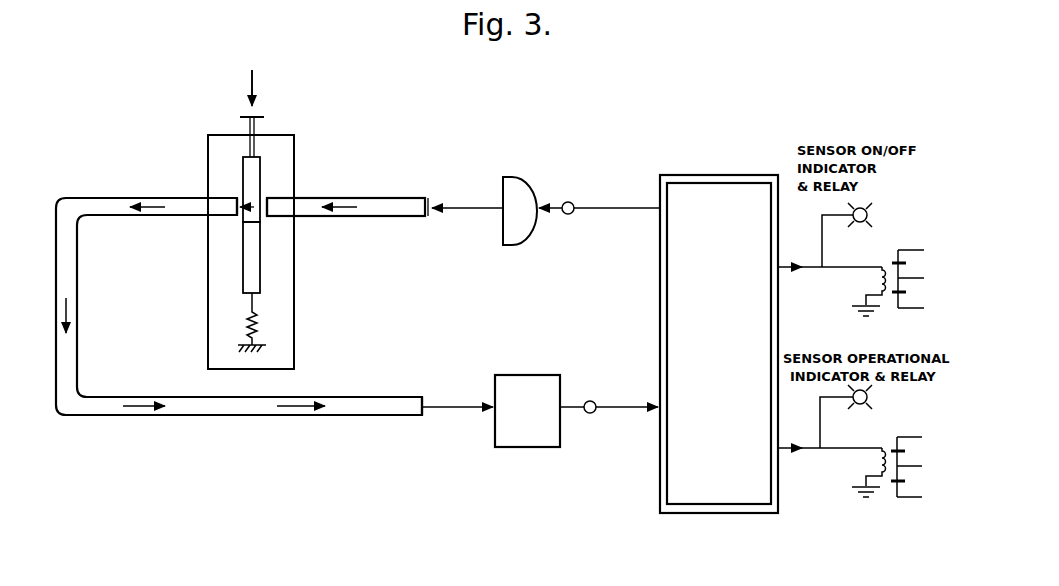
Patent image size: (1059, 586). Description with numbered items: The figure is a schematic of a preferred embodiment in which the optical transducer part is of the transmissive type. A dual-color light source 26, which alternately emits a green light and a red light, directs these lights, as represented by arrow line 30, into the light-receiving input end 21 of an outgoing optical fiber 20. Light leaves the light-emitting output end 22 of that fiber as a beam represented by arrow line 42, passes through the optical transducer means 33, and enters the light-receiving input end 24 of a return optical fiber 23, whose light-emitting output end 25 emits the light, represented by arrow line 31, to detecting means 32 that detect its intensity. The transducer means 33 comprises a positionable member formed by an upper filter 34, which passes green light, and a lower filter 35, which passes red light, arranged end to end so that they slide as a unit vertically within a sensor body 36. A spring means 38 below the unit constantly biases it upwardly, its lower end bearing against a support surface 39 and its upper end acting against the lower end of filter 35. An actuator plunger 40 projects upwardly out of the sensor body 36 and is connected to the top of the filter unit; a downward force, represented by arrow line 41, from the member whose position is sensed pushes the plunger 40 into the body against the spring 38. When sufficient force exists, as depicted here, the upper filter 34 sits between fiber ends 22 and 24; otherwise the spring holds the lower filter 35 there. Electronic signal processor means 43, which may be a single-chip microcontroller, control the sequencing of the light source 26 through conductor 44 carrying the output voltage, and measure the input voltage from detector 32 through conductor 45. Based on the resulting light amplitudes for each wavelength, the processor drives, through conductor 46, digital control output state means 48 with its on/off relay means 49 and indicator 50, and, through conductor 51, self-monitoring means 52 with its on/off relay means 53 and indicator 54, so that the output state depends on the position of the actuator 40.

The outgoing optical fiber 20 is at (352, 217).
The light-receiving input end 21 is at (445, 158).
The light-emitting output end 22 is at (262, 197).
The return optical fiber 23 is at (200, 417).
The light-receiving input end 24 is at (237, 218).
The light-emitting output end 25 is at (425, 418).
The dual-color light source 26 is at (515, 234).
The arrow line 30 is at (455, 209).
The arrow line 31 is at (455, 410).
The detecting means 32 is at (533, 426).
The optical transducer means 33 is at (204, 362).
The upper filter 34 is at (243, 160).
The lower filter 35 is at (260, 276).
The sensor body 36 is at (208, 305).
The spring means 38 is at (245, 325).
The support surface 39 is at (265, 350).
The actuator plunger 40 is at (255, 116).
The arrow line 41 is at (250, 85).
The arrow line 42 is at (262, 218).
The electronic signal processor means 43 is at (719, 344).
The arrow line 44 is at (590, 213).
The arrow line 45 is at (603, 413).
The arrow line 46 is at (815, 262).
The digital control output state means 48 is at (899, 218).
The output on/off relay means 49 is at (853, 288).
The indicator 50 is at (858, 229).
The arrow line 51 is at (812, 445).
The self-monitoring means 52 is at (896, 421).
The on/off relay means 53 is at (853, 465).
The indicator 54 is at (858, 411).